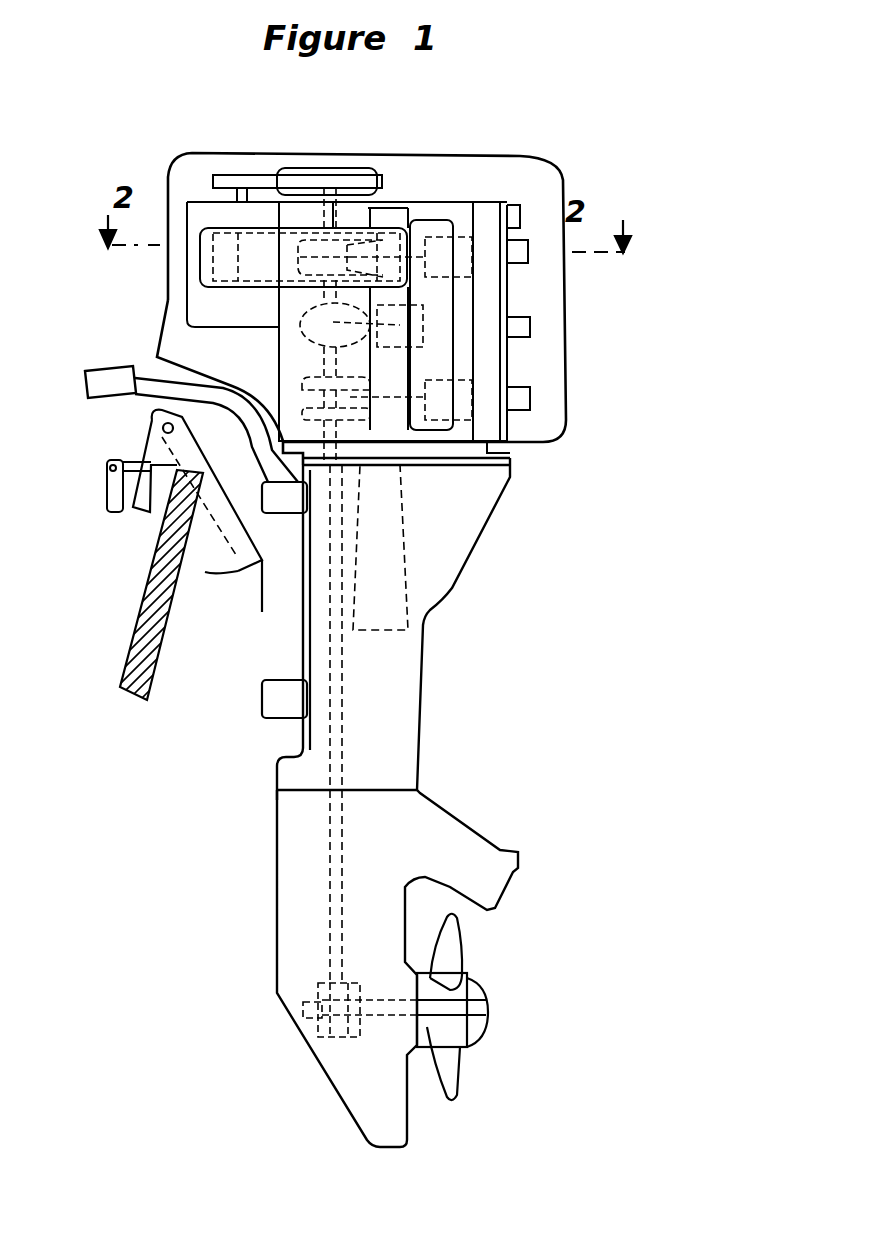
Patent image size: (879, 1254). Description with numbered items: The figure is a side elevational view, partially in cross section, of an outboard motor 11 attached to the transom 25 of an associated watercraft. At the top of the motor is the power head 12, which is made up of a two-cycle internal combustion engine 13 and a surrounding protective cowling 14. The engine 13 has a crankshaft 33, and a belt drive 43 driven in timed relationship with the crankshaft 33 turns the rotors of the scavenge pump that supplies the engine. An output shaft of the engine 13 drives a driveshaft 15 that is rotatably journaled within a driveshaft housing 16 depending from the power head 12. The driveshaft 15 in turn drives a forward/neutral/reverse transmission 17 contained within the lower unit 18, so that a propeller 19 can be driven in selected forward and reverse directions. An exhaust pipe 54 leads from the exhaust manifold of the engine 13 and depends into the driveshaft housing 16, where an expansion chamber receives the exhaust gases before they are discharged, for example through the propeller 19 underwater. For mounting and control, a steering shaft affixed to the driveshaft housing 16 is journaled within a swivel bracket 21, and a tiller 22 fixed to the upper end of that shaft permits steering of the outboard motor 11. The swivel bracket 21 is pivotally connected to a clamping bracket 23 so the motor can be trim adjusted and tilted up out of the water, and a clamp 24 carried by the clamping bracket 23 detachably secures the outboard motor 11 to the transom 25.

The outboard motor 11 is at (597, 158).
The power head 12 is at (483, 150).
The internal combustion engine 13 is at (497, 358).
The protective cowling 14 is at (573, 413).
The driveshaft 15 is at (342, 657).
The driveshaft housing 16 is at (410, 752).
The forward/neutral/reverse transmission 17 is at (290, 1023).
The lower unit 18 is at (278, 913).
The propeller 19 is at (453, 1080).
The swivel bracket 21 is at (263, 612).
The tiller 22 is at (107, 368).
The clamping bracket 23 is at (205, 572).
The clamp 24 is at (107, 493).
The transom 25 is at (133, 618).
The crankshaft 33 is at (323, 352).
The belt drive 43 is at (233, 180).
The exhaust pipe 54 is at (403, 510).